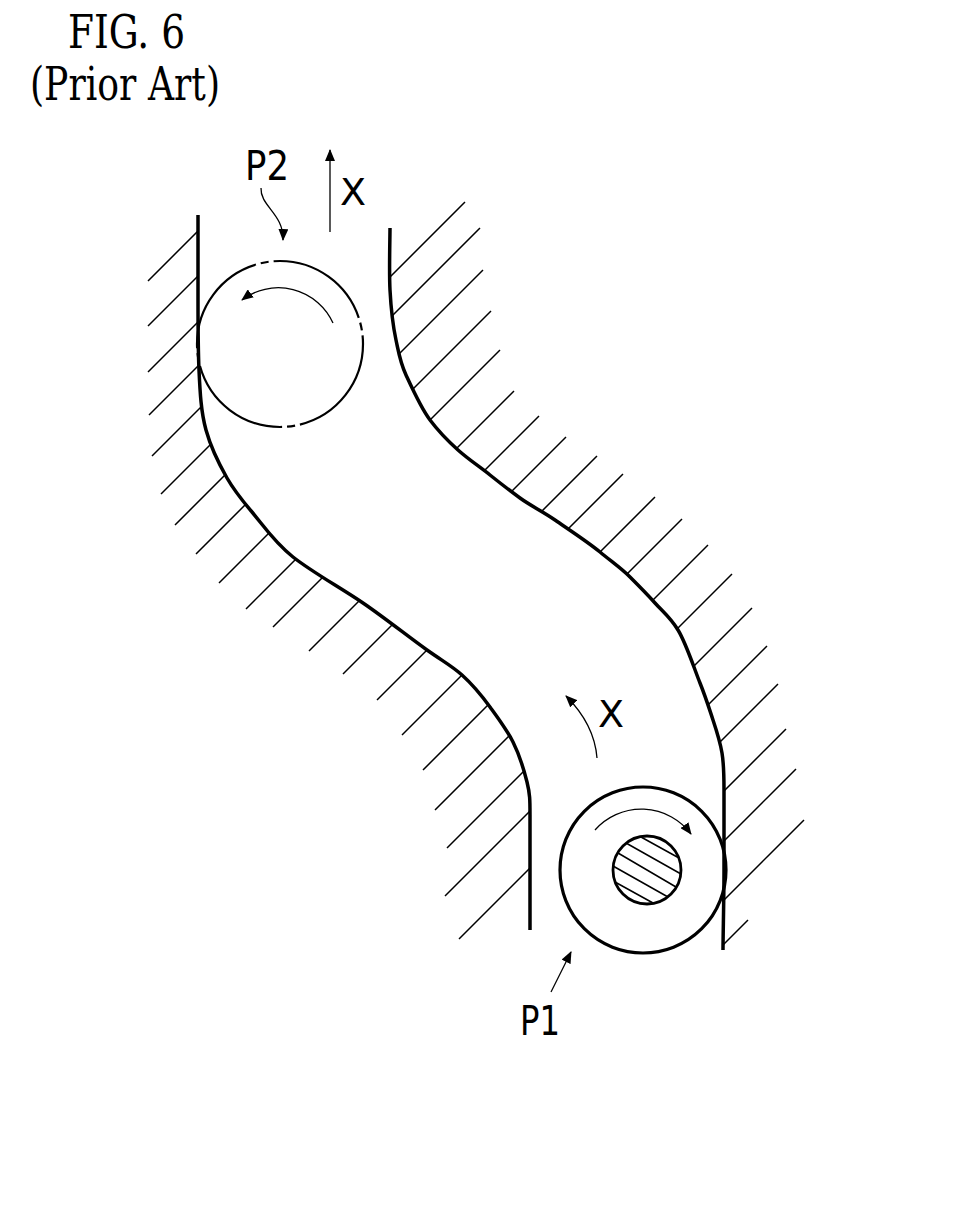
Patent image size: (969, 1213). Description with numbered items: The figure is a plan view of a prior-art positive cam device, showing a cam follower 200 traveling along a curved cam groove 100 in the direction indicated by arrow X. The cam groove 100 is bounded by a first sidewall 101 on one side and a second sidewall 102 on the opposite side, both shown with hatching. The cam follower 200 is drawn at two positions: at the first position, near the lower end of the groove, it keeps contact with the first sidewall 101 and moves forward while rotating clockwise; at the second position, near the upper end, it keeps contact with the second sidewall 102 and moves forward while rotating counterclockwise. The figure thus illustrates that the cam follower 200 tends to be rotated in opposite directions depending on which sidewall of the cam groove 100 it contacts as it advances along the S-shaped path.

The cam groove 100 is at (473, 576).
The first sidewall 101 is at (723, 742).
The second sidewall 102 is at (198, 240).
The cam follower 200 is at (330, 403).